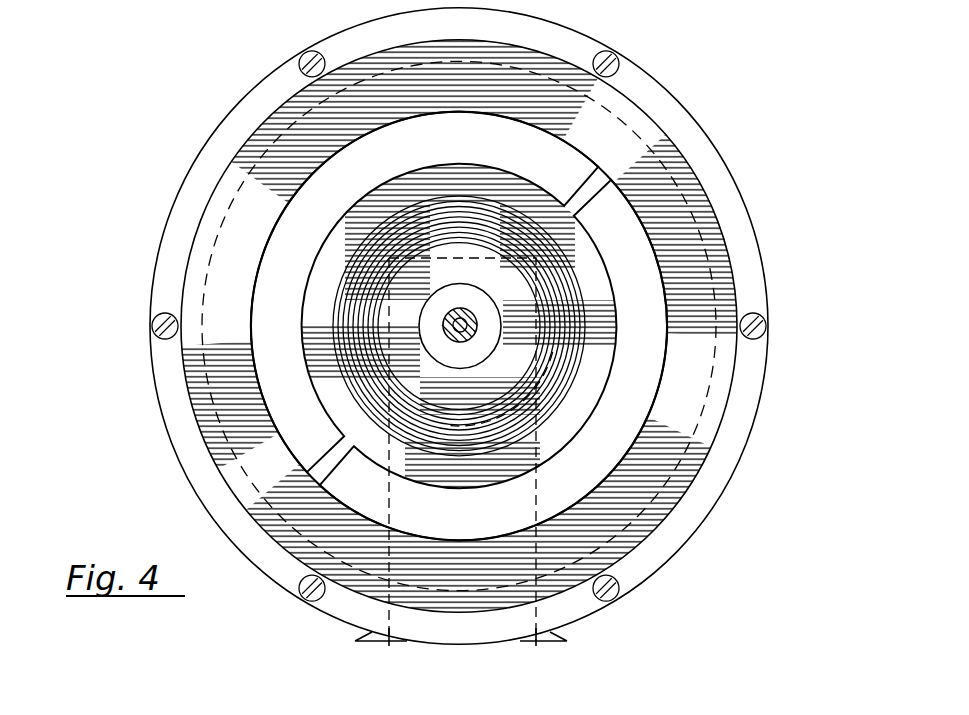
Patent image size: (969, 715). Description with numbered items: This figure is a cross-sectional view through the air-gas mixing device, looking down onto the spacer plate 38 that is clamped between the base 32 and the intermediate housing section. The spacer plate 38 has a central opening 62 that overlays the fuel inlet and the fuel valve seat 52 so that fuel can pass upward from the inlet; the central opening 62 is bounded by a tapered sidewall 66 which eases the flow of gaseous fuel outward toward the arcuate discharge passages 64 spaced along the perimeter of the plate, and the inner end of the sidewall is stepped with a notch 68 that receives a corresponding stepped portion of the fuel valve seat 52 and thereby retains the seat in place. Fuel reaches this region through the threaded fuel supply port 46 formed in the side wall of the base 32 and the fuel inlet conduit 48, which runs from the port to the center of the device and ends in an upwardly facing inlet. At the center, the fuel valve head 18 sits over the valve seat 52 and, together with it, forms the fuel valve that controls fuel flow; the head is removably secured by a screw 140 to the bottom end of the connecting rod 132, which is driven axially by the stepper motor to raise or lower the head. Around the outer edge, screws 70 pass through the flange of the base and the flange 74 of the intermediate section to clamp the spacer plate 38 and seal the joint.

The fuel valve head 18 is at (440, 348).
The base 32 is at (228, 460).
The spacer plate 38 is at (208, 216).
The fuel supply port 46 is at (560, 633).
The fuel inlet conduit 48 is at (520, 498).
The fuel valve seat 52 is at (496, 378).
The central opening 62 is at (555, 377).
The arcuate discharge passages 64 is at (643, 337).
The tapered sidewall 66 is at (355, 308).
The notch 68 is at (512, 289).
The screws 70 is at (301, 55).
The flange 74 is at (745, 247).
The connecting rod 132 is at (471, 335).
The screw 140 is at (481, 324).